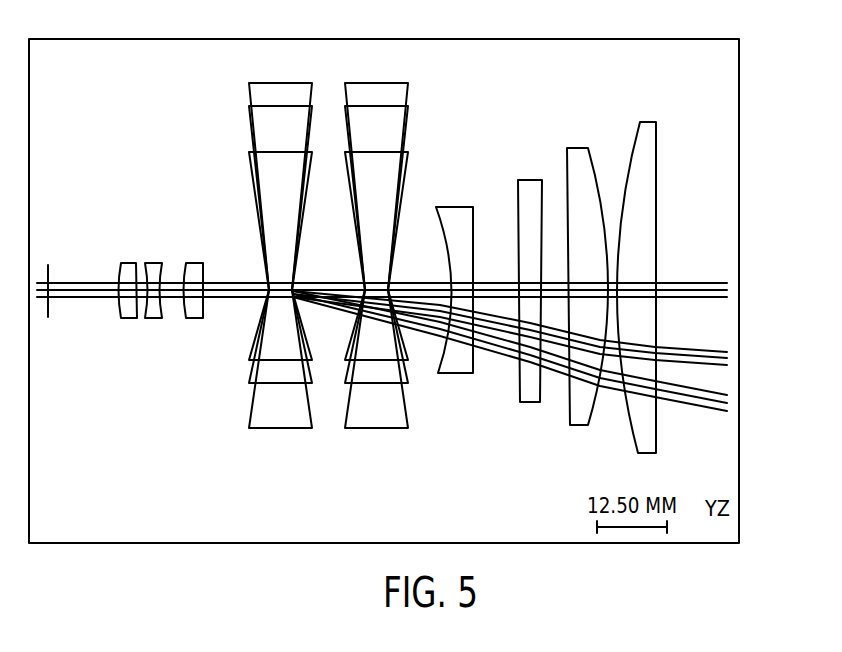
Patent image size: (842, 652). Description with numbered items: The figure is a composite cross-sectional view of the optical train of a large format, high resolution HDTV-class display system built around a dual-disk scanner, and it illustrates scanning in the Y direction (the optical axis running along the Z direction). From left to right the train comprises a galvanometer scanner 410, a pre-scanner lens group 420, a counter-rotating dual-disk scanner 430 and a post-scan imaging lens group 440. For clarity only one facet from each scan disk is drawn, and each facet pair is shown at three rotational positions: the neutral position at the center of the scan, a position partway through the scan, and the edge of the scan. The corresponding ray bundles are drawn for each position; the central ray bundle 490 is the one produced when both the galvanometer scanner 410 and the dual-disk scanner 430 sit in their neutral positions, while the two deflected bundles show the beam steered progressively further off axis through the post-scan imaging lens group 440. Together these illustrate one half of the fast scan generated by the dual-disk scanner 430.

The galvanometer scanner 410 is at (50, 310).
The pre-scanner lens group 420 is at (220, 322).
The counter-rotating dual-disk scanner 430 is at (324, 277).
The post-scan imaging lens group 440 is at (672, 459).
The ray bundle 490 is at (705, 281).